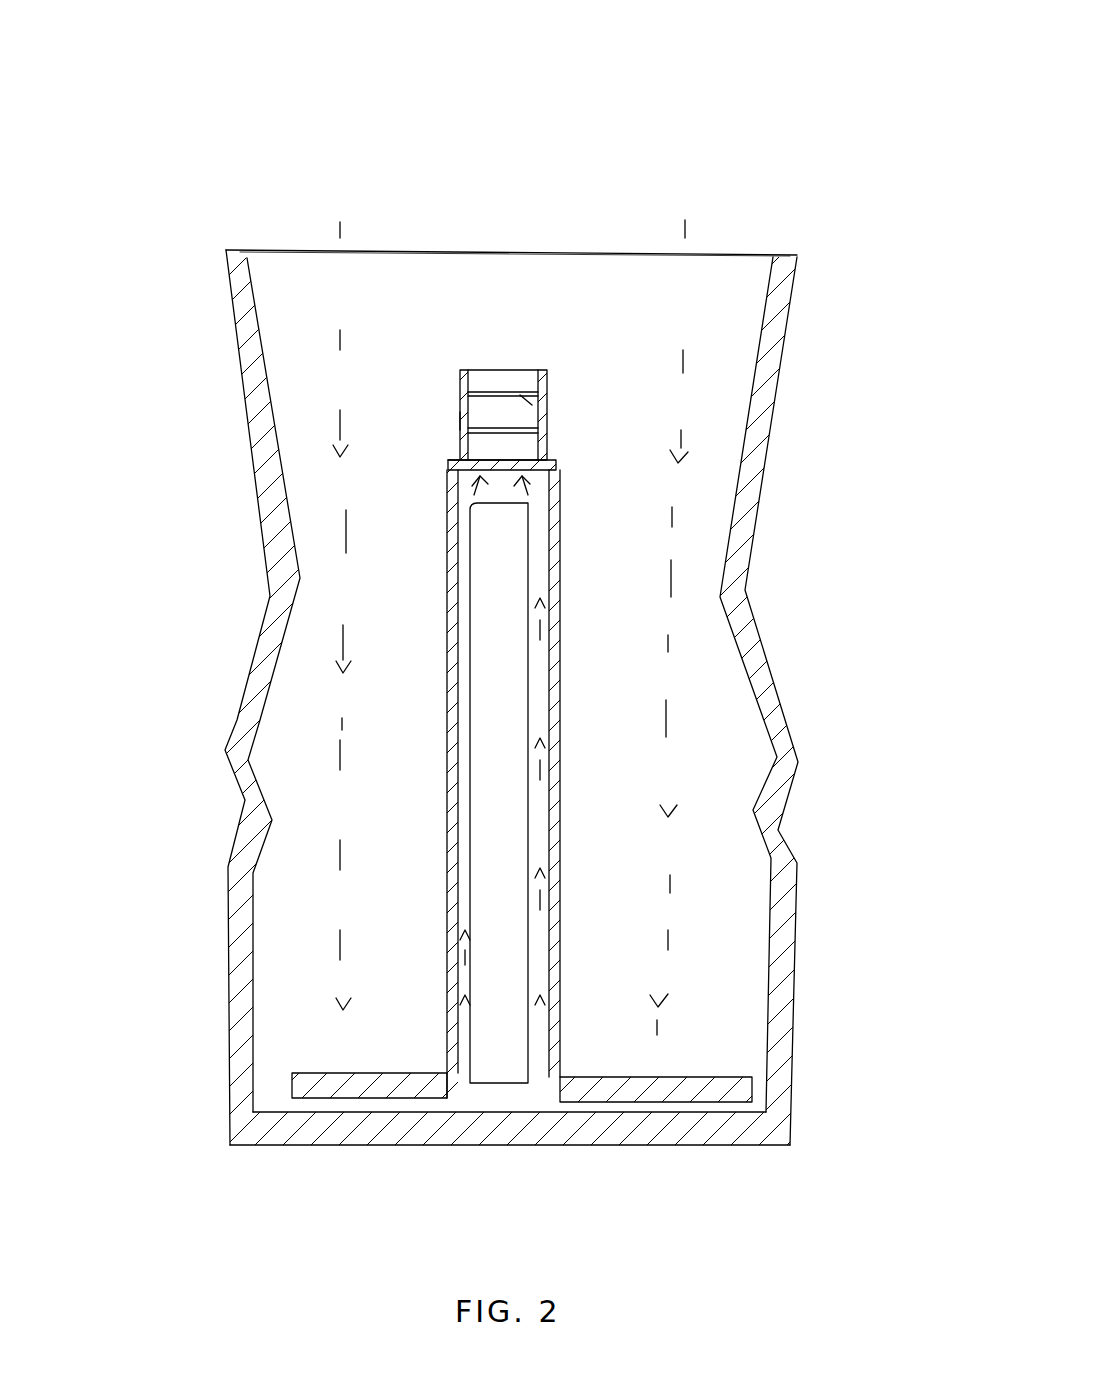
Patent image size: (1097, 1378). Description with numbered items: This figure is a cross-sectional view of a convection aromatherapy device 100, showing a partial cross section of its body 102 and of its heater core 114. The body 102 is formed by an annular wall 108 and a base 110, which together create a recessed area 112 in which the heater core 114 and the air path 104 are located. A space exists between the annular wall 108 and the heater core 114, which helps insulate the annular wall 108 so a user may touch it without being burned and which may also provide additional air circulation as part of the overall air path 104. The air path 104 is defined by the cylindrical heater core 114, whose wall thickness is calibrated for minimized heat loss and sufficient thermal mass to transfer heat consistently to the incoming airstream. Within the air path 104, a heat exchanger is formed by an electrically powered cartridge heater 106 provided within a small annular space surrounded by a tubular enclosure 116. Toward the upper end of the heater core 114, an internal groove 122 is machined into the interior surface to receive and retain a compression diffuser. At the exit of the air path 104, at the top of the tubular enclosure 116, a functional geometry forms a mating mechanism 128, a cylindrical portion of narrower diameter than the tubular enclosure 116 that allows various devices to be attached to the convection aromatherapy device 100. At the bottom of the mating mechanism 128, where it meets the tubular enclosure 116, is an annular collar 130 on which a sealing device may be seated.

The convection aromatherapy device 100 is at (790, 117).
The body 102 is at (170, 303).
The air path 104 is at (683, 307).
The cartridge heater 106 is at (507, 735).
The annular wall 108 is at (247, 450).
The base 110 is at (675, 1148).
The recessed area 112 is at (375, 420).
The heater core 114 is at (563, 588).
The tubular enclosure 116 is at (558, 637).
The internal groove 122 is at (547, 450).
The mating mechanism 128 is at (457, 417).
The annular collar 130 is at (452, 450).